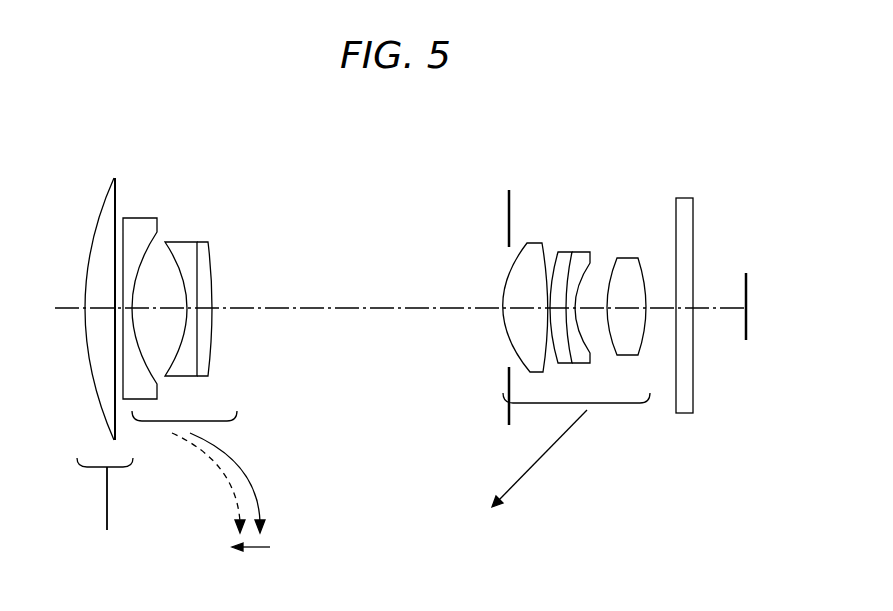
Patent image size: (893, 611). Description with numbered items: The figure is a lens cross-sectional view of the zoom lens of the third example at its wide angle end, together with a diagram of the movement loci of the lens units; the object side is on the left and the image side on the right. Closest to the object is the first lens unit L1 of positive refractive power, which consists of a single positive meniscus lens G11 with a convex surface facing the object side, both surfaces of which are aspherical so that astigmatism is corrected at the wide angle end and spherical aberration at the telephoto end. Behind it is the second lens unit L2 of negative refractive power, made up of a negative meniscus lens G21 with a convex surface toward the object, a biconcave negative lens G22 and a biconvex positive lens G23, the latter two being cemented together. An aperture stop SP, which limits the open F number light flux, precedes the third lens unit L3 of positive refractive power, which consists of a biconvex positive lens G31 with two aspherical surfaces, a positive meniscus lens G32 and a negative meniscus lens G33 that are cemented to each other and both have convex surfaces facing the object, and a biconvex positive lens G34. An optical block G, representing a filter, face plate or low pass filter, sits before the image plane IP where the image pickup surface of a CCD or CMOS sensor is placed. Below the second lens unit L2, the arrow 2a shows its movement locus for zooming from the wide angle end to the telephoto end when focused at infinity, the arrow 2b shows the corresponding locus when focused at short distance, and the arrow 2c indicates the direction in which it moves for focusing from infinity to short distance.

The first lens unit L1 is at (83, 120).
The positive meniscus lens G11 is at (114, 178).
The second lens unit L2 is at (140, 152).
The negative meniscus lens G21 is at (143, 227).
The biconcave negative lens G22 is at (188, 252).
The biconvex positive lens G23 is at (207, 243).
The third lens unit L3 is at (678, 141).
The biconvex positive lens G31 is at (537, 248).
The positive meniscus lens G32 is at (567, 255).
The negative meniscus lens G33 is at (583, 255).
The biconvex positive lens G34 is at (630, 262).
The aperture stop SP is at (505, 233).
The optical block G is at (685, 205).
The image plane IP is at (747, 278).
The arrow 2a is at (243, 480).
The arrow 2b is at (217, 472).
The arrow 2c is at (256, 551).